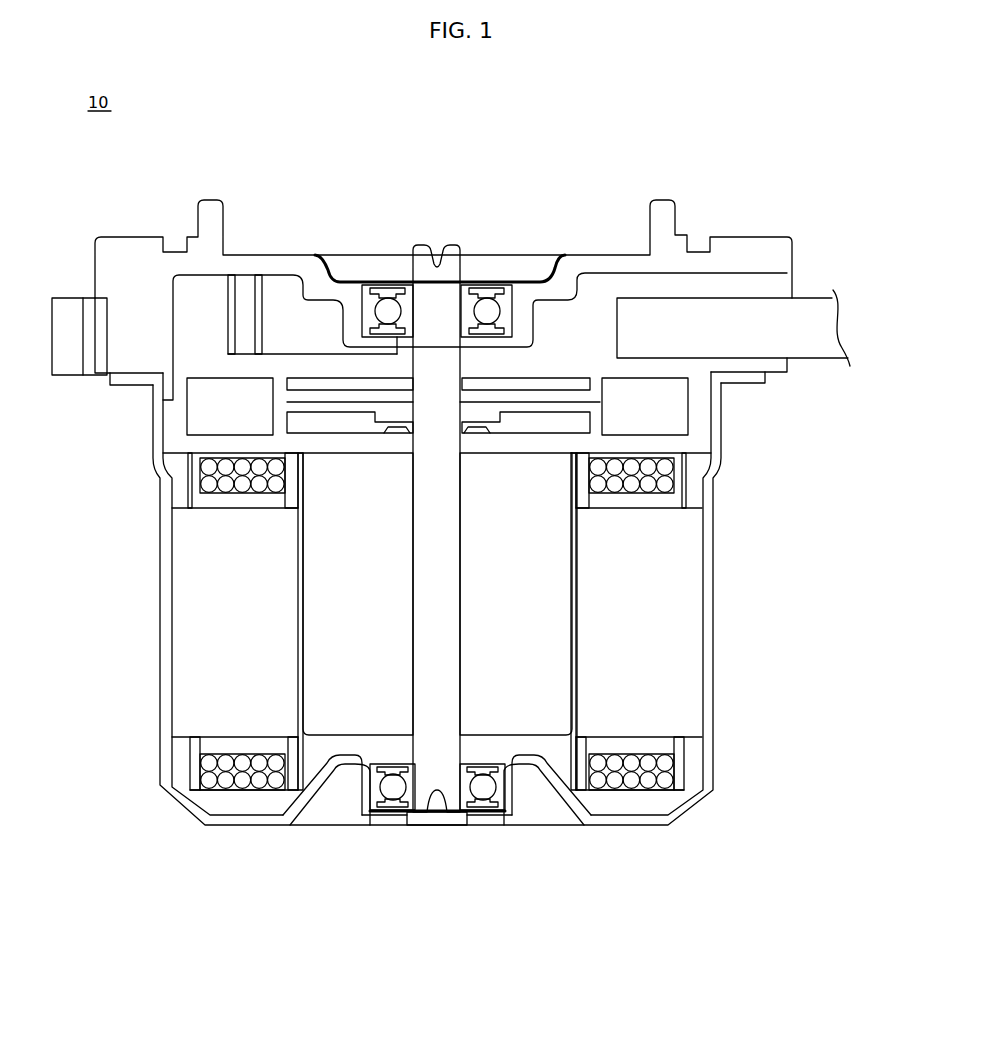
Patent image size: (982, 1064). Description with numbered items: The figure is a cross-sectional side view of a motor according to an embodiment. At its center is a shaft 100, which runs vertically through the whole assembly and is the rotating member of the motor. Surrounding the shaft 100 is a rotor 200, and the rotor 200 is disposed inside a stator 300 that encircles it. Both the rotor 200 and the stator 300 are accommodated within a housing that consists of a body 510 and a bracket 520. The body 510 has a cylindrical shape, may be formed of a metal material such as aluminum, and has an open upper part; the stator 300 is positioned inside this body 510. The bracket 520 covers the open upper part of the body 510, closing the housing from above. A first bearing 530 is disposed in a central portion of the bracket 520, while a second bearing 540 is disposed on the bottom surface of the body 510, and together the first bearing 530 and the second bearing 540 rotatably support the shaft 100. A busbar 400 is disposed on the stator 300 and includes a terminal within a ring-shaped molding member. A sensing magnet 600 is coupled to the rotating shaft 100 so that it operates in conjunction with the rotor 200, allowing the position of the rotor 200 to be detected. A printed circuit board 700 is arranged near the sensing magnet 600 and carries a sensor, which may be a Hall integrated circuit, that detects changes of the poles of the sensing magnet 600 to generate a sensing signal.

The shaft 100 is at (437, 689).
The rotor 200 is at (515, 589).
The stator 300 is at (660, 556).
The busbar 400 is at (700, 430).
The body 510 is at (722, 412).
The bracket 520 is at (795, 258).
The first bearing 530 is at (509, 299).
The second bearing 540 is at (503, 794).
The sensing magnet 600 is at (283, 418).
The printed circuit board 700 is at (283, 380).